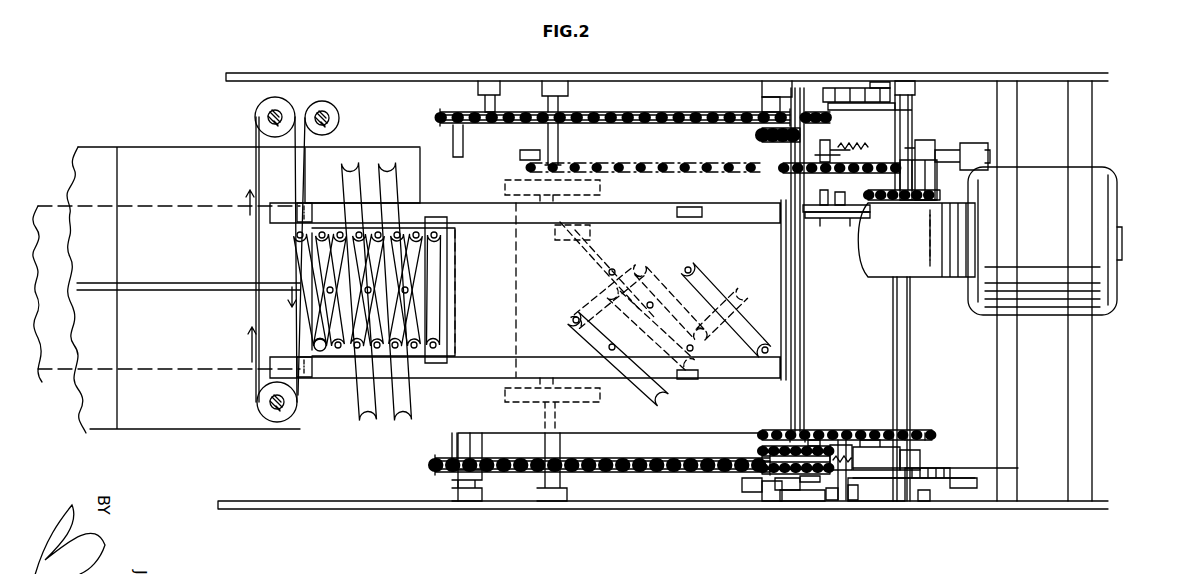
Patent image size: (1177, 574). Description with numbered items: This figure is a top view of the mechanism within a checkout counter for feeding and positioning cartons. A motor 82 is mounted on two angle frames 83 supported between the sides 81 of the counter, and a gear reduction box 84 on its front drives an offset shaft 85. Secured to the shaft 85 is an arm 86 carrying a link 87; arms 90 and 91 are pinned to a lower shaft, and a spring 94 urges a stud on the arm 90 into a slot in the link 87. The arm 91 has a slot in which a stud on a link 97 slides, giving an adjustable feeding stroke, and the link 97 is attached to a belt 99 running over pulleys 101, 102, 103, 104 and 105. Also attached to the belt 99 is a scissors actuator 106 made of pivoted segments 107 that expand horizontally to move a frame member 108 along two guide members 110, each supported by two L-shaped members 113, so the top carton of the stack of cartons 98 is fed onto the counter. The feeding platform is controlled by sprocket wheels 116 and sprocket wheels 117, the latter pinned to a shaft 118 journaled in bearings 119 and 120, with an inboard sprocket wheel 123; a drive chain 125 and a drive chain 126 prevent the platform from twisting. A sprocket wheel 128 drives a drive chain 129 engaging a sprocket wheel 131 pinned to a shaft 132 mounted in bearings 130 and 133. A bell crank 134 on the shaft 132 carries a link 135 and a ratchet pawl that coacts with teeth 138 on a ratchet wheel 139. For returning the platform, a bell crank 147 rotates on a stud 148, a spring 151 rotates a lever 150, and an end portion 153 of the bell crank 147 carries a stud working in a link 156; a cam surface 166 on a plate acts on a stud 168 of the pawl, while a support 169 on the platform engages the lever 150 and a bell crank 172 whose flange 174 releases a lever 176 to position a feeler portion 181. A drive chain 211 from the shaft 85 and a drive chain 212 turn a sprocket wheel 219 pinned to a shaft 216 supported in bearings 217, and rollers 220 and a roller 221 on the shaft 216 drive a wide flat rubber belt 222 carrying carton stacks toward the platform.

The sides of the checkout counter 81 is at (1036, 73).
The motor 82 is at (1117, 297).
The angle frames 83 is at (1017, 397).
The gear reduction box 84 is at (884, 266).
The offset shaft 85 is at (937, 186).
The arm 86 is at (937, 153).
The link 87 is at (846, 153).
The arm 90 is at (830, 150).
The arm 91 is at (896, 95).
The spring 94 is at (907, 154).
The link 97 is at (839, 103).
The stack of cartons 98 is at (455, 160).
The belt 99 is at (256, 252).
The pulley 101 is at (832, 88).
The pulley 102 is at (874, 82).
The pulley 103 is at (285, 420).
The pulley 104 is at (255, 117).
The pulley 105 is at (330, 118).
The scissors actuator 106 is at (389, 164).
The segments 107 is at (448, 318).
The frame member 108 is at (447, 258).
The guide members 110 is at (628, 204).
The L-shaped members 113 is at (316, 202).
The sprocket wheels 116 is at (494, 94).
The sprocket wheels 117 is at (768, 98).
The shaft 118 is at (804, 305).
The bearing 119 is at (779, 81).
The bearing 120 is at (802, 501).
The sprocket wheel 123 is at (762, 148).
The drive chain 125 is at (606, 112).
The drive chain 126 is at (830, 122).
The sprocket wheel 128 is at (806, 432).
The drive chain 129 is at (818, 440).
The bearing 130 is at (915, 88).
The sprocket wheel 131 is at (917, 446).
The shaft 132 is at (910, 341).
The bearing 133 is at (887, 500).
The bell crank 134 is at (922, 501).
The link 135 is at (945, 486).
The teeth 138 is at (1018, 468).
The ratchet wheel 139 is at (866, 490).
The bell crank 147 is at (844, 500).
The stud 148 is at (828, 500).
The lever 150 is at (778, 500).
The spring 151 is at (804, 501).
The end portion 153 is at (854, 466).
The link 156 is at (860, 447).
The cam surface 166 is at (948, 470).
The stud 168 is at (920, 453).
The support 169 is at (742, 482).
The bell crank 172 is at (814, 204).
The flange 174 is at (839, 205).
The lever 176 is at (862, 214).
The feeler portion 181 is at (828, 220).
The drive chain 211 is at (940, 198).
The drive chain 212 is at (608, 162).
The shaft 216 is at (560, 134).
The bearings 217 is at (557, 81).
The sprocket wheel 219 is at (532, 148).
The rollers 220 is at (515, 186).
The roller 221 is at (595, 226).
The belt 222 is at (45, 378).